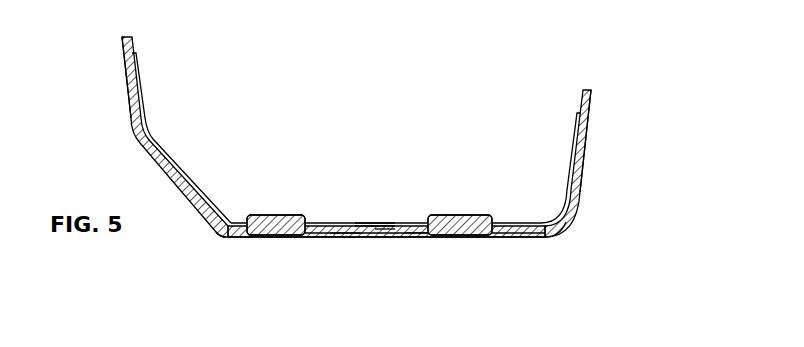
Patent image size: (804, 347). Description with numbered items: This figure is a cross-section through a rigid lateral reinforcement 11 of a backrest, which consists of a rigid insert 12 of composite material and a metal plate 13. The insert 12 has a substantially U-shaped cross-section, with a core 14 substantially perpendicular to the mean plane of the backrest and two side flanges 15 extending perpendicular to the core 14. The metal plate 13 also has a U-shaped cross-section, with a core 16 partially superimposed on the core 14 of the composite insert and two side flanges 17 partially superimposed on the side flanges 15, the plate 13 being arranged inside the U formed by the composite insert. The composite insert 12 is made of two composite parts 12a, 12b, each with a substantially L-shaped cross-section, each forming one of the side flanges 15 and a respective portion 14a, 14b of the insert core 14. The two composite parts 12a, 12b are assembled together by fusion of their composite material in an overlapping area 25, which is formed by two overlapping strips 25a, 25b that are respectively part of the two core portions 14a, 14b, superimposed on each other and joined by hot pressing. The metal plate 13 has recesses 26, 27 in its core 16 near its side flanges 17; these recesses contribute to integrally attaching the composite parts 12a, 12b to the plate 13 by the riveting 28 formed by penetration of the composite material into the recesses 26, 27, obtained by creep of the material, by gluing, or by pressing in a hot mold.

The rigid lateral reinforcement 11 is at (654, 106).
The rigid insert 12 is at (592, 86).
The composite part 12a is at (220, 244).
The composite part 12b is at (551, 247).
The metal plate 13 is at (146, 71).
The core 14 is at (463, 242).
The core portion 14a is at (343, 238).
The core portion 14b is at (508, 238).
The side flange 15 is at (129, 99).
The core 16 is at (323, 221).
The side flange 17 is at (140, 109).
The overlapping area 25 is at (387, 245).
The overlapping strip 25a is at (372, 223).
The overlapping strip 25b is at (364, 238).
The recess 26 is at (317, 238).
The recess 27 is at (420, 238).
The riveting 28 is at (271, 218).